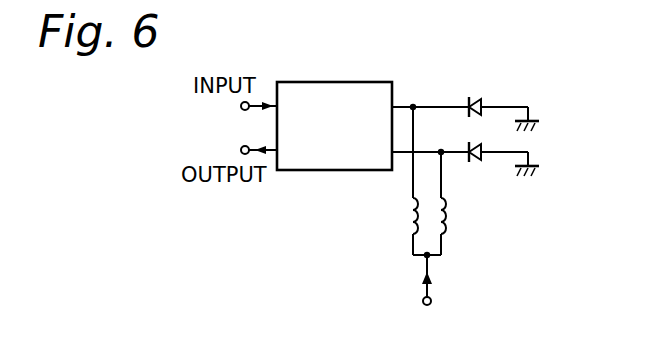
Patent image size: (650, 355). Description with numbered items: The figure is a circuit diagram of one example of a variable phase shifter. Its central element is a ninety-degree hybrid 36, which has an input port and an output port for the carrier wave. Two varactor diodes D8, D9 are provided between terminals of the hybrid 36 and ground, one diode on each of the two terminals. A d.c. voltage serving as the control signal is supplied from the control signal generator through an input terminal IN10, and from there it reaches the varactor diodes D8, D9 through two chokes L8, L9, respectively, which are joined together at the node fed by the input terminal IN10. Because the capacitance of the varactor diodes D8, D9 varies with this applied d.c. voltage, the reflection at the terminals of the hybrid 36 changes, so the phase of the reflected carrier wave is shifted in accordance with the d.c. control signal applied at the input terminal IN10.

The 90° hybrid 36 is at (369, 82).
The varactor diode D8 is at (474, 95).
The varactor diode D9 is at (473, 161).
The choke L8 is at (407, 219).
The choke L9 is at (449, 219).
The input terminal IN10 is at (425, 297).